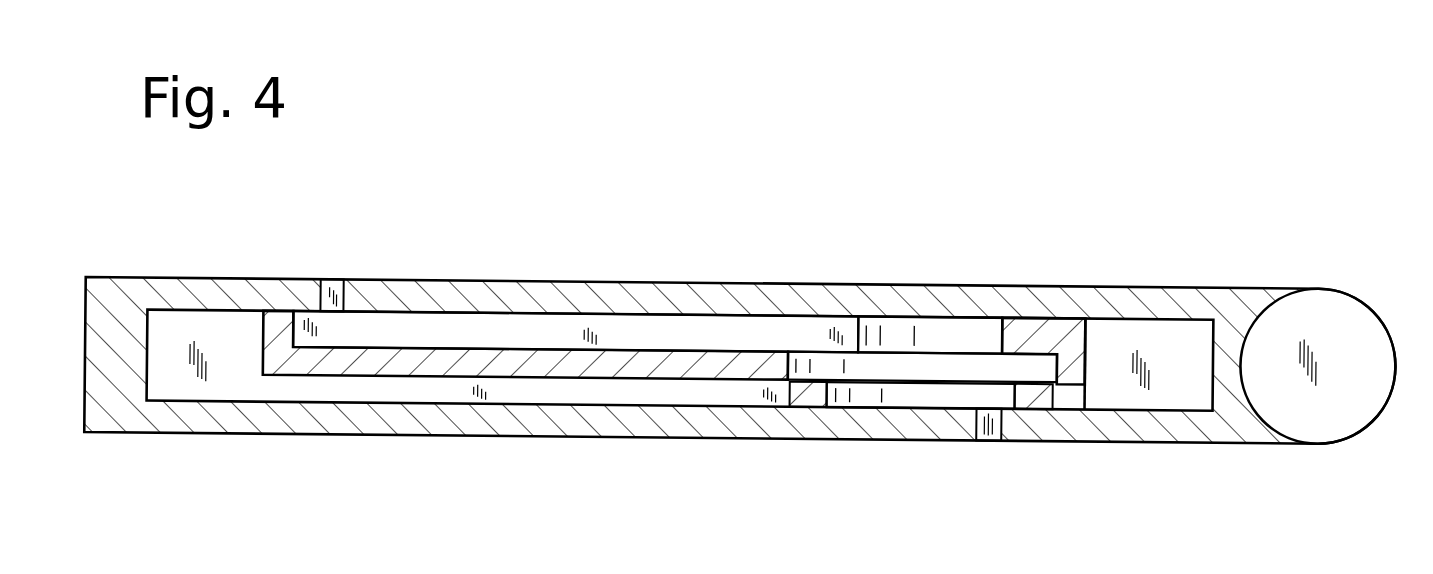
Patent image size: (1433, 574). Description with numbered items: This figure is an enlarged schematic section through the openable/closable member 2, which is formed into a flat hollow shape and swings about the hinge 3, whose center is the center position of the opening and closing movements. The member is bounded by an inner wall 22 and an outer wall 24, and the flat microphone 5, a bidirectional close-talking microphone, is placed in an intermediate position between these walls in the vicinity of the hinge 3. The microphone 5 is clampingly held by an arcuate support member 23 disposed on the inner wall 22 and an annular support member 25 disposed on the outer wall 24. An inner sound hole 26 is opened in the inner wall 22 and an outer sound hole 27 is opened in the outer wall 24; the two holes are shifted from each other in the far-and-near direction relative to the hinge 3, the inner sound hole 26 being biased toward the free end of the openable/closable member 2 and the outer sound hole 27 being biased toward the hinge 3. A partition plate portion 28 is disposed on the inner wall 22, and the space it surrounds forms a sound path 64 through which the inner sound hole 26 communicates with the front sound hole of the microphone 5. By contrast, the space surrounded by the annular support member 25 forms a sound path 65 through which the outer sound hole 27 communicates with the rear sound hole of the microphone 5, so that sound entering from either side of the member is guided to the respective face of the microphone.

The openable/closable member 2 is at (1148, 275).
The hinge 3 is at (1365, 310).
The microphone 5 is at (927, 352).
The inner wall 22 is at (770, 289).
The arcuate support member 23 is at (1067, 318).
The outer wall 24 is at (648, 435).
The annular support member 25 is at (1033, 383).
The inner sound hole 26 is at (333, 278).
The outer sound hole 27 is at (983, 431).
The partition plate portion 28 is at (455, 366).
The sound path 64 is at (632, 275).
The sound path 65 is at (868, 385).